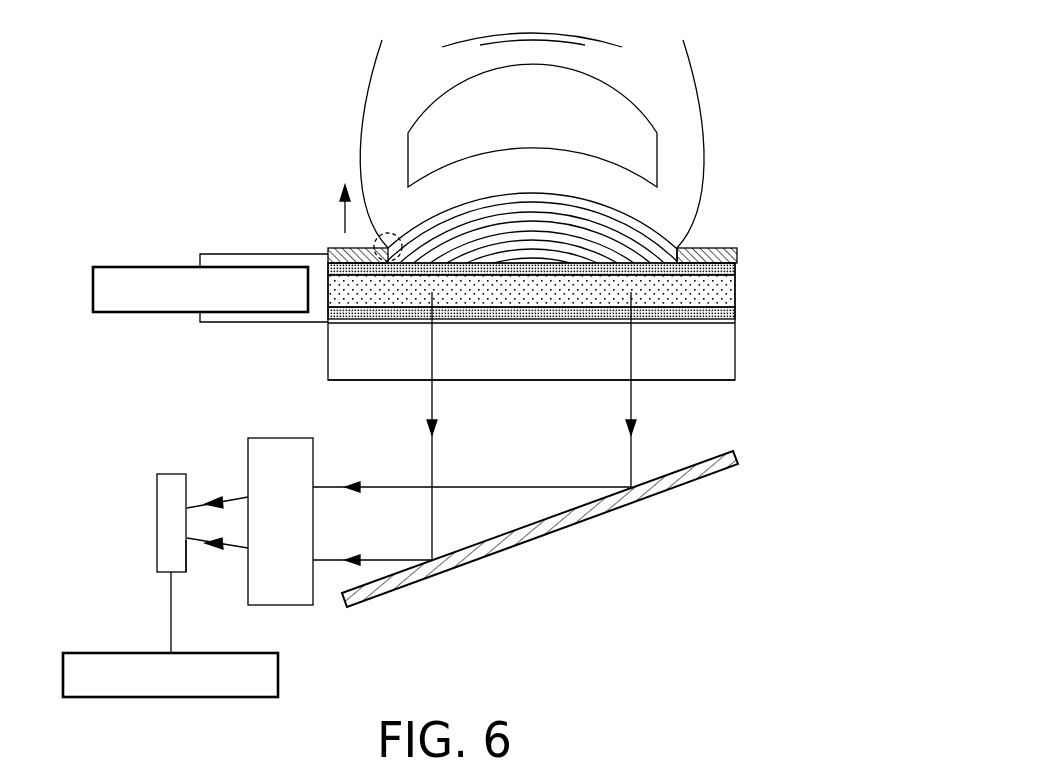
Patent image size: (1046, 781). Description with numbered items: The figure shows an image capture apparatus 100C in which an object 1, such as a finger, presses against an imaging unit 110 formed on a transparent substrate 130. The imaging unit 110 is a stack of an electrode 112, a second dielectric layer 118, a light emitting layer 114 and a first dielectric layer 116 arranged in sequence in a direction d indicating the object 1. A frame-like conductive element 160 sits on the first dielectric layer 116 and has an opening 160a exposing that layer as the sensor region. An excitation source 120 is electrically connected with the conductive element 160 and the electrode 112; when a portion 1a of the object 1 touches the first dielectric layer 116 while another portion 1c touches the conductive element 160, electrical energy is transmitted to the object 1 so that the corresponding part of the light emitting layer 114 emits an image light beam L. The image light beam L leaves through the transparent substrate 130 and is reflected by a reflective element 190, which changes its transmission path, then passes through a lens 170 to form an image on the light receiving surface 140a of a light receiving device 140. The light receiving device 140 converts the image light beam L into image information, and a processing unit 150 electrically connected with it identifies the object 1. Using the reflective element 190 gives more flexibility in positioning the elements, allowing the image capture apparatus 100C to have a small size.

The object 1 is at (700, 106).
The portion of the object 1a is at (652, 243).
The another portion of the object 1c is at (388, 232).
The direction d is at (345, 217).
The imaging unit 110 is at (594, 305).
The electrode 112 is at (564, 343).
The light emitting layer 114 is at (724, 293).
The first dielectric layer 116 is at (738, 270).
The second dielectric layer 118 is at (723, 317).
The excitation source 120 is at (138, 266).
The transparent substrate 130 is at (705, 362).
The light receiving device 140 is at (163, 518).
The light receiving surface 140a is at (198, 551).
The processing unit 150 is at (107, 652).
The conductive element 160 is at (330, 247).
The opening 160a is at (664, 246).
The lens 170 is at (280, 437).
The reflective element 190 is at (741, 456).
The image light beam L is at (631, 407).
The image capture apparatus 100C is at (841, 617).